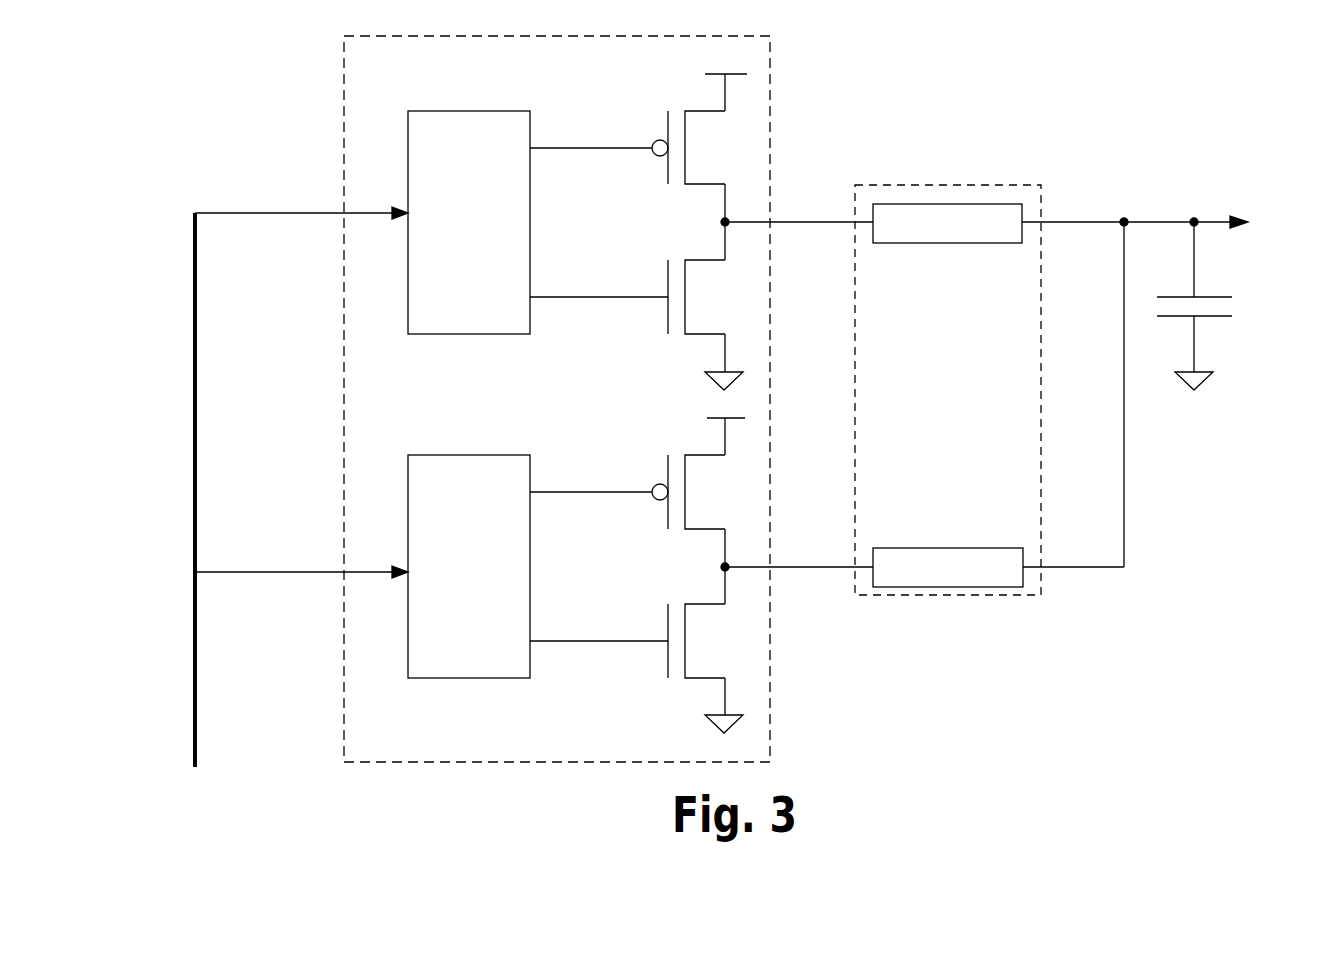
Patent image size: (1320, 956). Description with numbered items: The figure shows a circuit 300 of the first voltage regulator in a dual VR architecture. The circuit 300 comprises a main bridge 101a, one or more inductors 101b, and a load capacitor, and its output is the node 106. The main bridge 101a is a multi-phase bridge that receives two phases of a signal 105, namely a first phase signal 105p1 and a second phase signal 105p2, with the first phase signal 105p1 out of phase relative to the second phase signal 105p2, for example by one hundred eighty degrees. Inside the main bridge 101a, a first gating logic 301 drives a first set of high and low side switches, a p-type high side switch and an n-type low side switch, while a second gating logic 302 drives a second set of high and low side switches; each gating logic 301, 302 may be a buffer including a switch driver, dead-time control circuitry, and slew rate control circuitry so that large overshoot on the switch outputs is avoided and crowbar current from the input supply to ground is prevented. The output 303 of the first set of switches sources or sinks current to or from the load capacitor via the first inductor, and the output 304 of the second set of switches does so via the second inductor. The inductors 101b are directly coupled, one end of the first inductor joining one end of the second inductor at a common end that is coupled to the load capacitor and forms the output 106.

The circuit 300 is at (227, 87).
The main bridge 101a is at (557, 399).
The inductors 101b is at (948, 390).
The signal 105 is at (195, 503).
The first phase signal 105p1 is at (301, 224).
The second phase signal 105p2 is at (301, 561).
The first gating logic 301 is at (538, 222).
The second gating logic 302 is at (538, 566).
The output of first set of switches 303 is at (790, 222).
The output of second set of switches 304 is at (790, 567).
The output 106 is at (1087, 222).